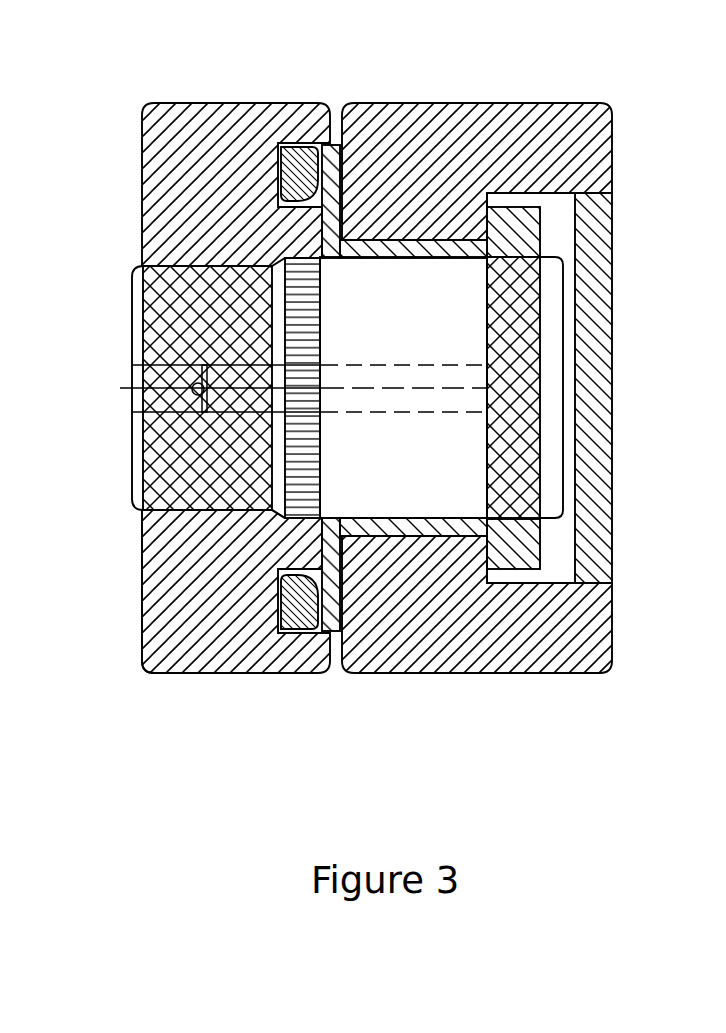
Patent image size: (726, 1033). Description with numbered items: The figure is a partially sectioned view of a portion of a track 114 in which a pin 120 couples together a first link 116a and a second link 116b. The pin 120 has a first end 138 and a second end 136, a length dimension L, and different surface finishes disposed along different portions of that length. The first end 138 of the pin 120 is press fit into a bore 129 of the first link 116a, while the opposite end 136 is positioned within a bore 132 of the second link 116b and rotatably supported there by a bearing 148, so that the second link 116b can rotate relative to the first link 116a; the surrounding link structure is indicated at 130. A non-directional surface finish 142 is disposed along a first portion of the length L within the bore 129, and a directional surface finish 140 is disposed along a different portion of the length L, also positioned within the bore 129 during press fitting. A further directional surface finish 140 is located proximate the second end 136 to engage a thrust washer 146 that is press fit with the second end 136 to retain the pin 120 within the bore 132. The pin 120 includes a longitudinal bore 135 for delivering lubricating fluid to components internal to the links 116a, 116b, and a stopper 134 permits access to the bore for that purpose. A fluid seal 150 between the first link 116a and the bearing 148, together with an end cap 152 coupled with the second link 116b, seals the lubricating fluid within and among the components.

The track 114 is at (185, 50).
The first link 116a is at (229, 652).
The second link 116b is at (516, 653).
The pin 120 is at (133, 498).
The bore 129 is at (245, 513).
The housing 130 is at (170, 528).
The bore 132 is at (402, 243).
The stopper 134 is at (143, 406).
The longitudinal bore 135 is at (427, 365).
The second end 136 is at (584, 312).
The first end 138 is at (120, 305).
The directional surface finish 140 is at (163, 293).
The non-directional surface finish 142 is at (302, 282).
The thrust washer 146 is at (523, 222).
The bearing 148 is at (348, 153).
The fluid seal 150 is at (290, 162).
The end cap 152 is at (594, 432).
The length dimension L is at (402, 383).